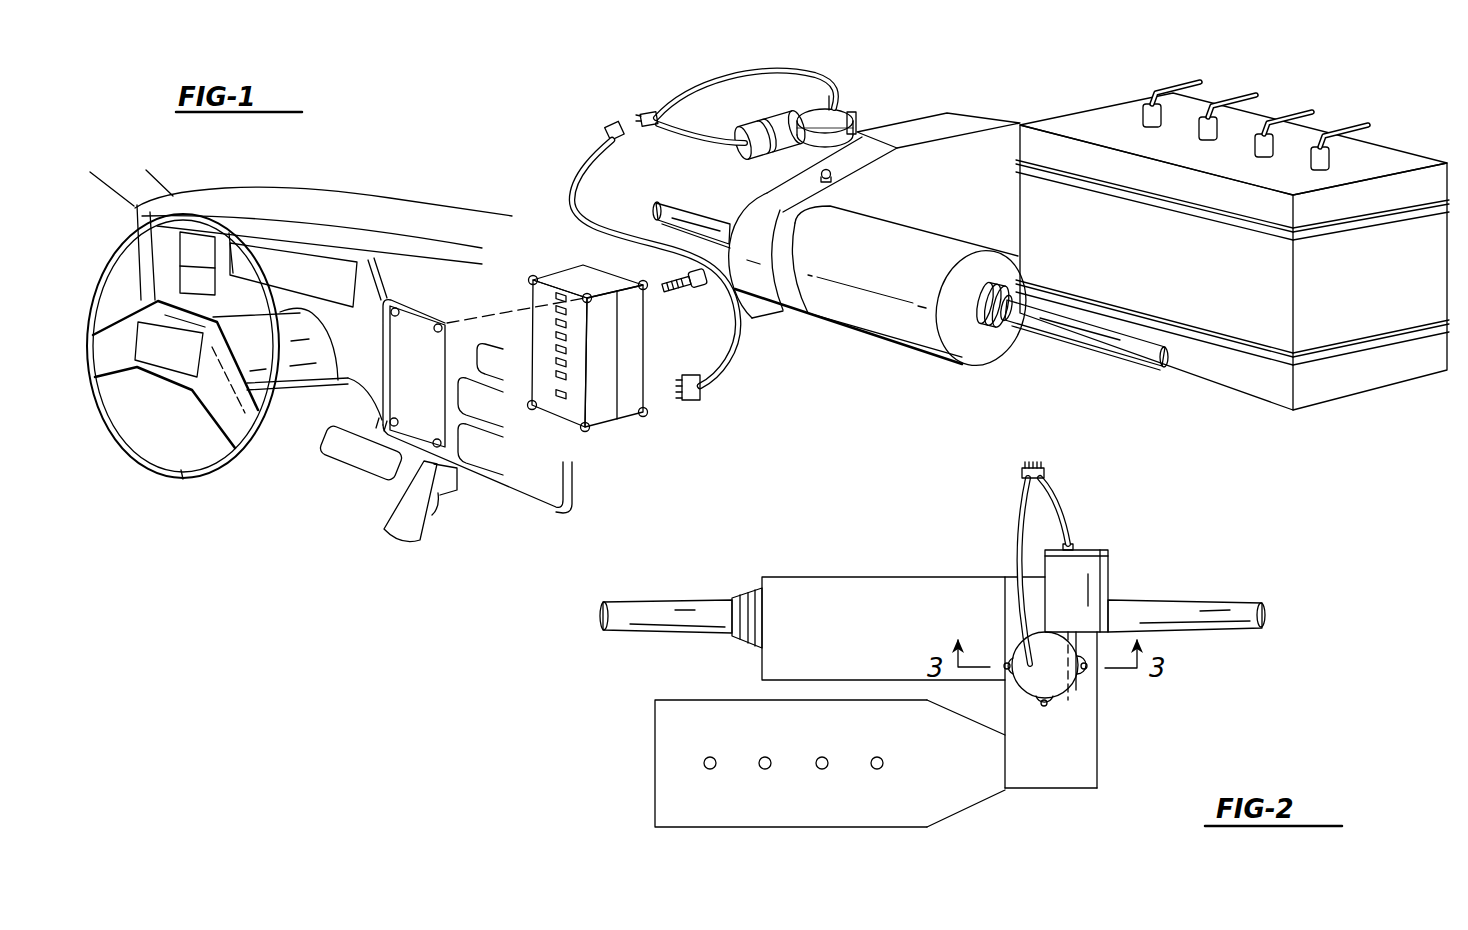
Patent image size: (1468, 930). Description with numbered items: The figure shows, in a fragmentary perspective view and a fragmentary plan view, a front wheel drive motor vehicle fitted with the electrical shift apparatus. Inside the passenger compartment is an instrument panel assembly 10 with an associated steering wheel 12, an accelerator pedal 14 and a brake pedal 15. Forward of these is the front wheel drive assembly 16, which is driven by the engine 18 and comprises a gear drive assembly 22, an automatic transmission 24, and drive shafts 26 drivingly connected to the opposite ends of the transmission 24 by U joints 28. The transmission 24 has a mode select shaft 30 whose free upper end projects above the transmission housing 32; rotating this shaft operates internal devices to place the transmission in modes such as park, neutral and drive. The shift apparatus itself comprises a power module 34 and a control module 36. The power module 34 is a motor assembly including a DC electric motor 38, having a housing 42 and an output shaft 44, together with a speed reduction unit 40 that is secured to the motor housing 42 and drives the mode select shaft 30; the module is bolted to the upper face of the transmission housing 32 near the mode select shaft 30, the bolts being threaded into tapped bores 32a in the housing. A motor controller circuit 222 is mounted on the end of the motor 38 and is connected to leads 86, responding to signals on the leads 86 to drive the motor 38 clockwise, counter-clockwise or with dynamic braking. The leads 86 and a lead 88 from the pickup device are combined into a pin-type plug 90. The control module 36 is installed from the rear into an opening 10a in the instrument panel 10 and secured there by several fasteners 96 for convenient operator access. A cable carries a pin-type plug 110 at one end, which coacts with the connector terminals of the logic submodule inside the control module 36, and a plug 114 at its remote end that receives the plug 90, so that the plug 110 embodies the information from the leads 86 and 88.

In FIG. 1, the instrument panel assembly 10 is at (406, 212).
In FIG. 1, the opening 10a is at (442, 350).
In FIG. 1, the steering wheel 12 is at (182, 481).
In FIG. 1, the accelerator pedal 14 is at (378, 516).
In FIG. 1, the brake pedal 15 is at (346, 474).
In FIG. 1, the front wheel drive assembly 16 is at (1165, 80).
In FIG. 2, the engine 18 is at (652, 760).
In FIG. 1, the gear drive assembly 22 is at (964, 118).
In FIG. 2, the gear drive assembly 22 is at (1053, 795).
In FIG. 1, the automatic transmission 24 is at (903, 320).
In FIG. 2, the automatic transmission 24 is at (895, 574).
In FIG. 1, the drive shafts 26 is at (667, 204).
In FIG. 2, the drive shafts 26 is at (641, 600).
In FIG. 1, the U joints 28 is at (1000, 327).
In FIG. 2, the U joints 28 is at (748, 592).
In FIG. 1, the mode select shaft 30 is at (752, 199).
In FIG. 1, the transmission housing 32 is at (768, 249).
In FIG. 2, the transmission housing 32 is at (885, 653).
In FIG. 1, the tapped bores 32a is at (778, 213).
In FIG. 1, the power module 34 is at (857, 106).
In FIG. 2, the power module 34 is at (1060, 704).
In FIG. 1, the control module 36 is at (605, 434).
In FIG. 1, the DC electric motor 38 is at (769, 120).
In FIG. 2, the DC electric motor 38 is at (1110, 576).
In FIG. 1, the speed reduction unit 40 is at (838, 97).
In FIG. 2, the speed reduction unit 40 is at (1066, 702).
In FIG. 2, the motor housing 42 is at (1087, 609).
In FIG. 2, the output shaft 44 is at (1094, 676).
In FIG. 2, the leads 86 is at (1066, 516).
In FIG. 1, the lead 88 is at (793, 82).
In FIG. 2, the lead 88 is at (1024, 500).
In FIG. 1, the pin-type plug 90 is at (643, 114).
In FIG. 2, the pin-type plug 90 is at (1046, 470).
In FIG. 1, the fasteners 96 is at (687, 292).
In FIG. 1, the pin-type plug 110 is at (700, 398).
In FIG. 1, the plug 114 is at (605, 128).
In FIG. 1, the motor controller circuit 222 is at (737, 130).
In FIG. 2, the motor controller circuit 222 is at (1108, 550).